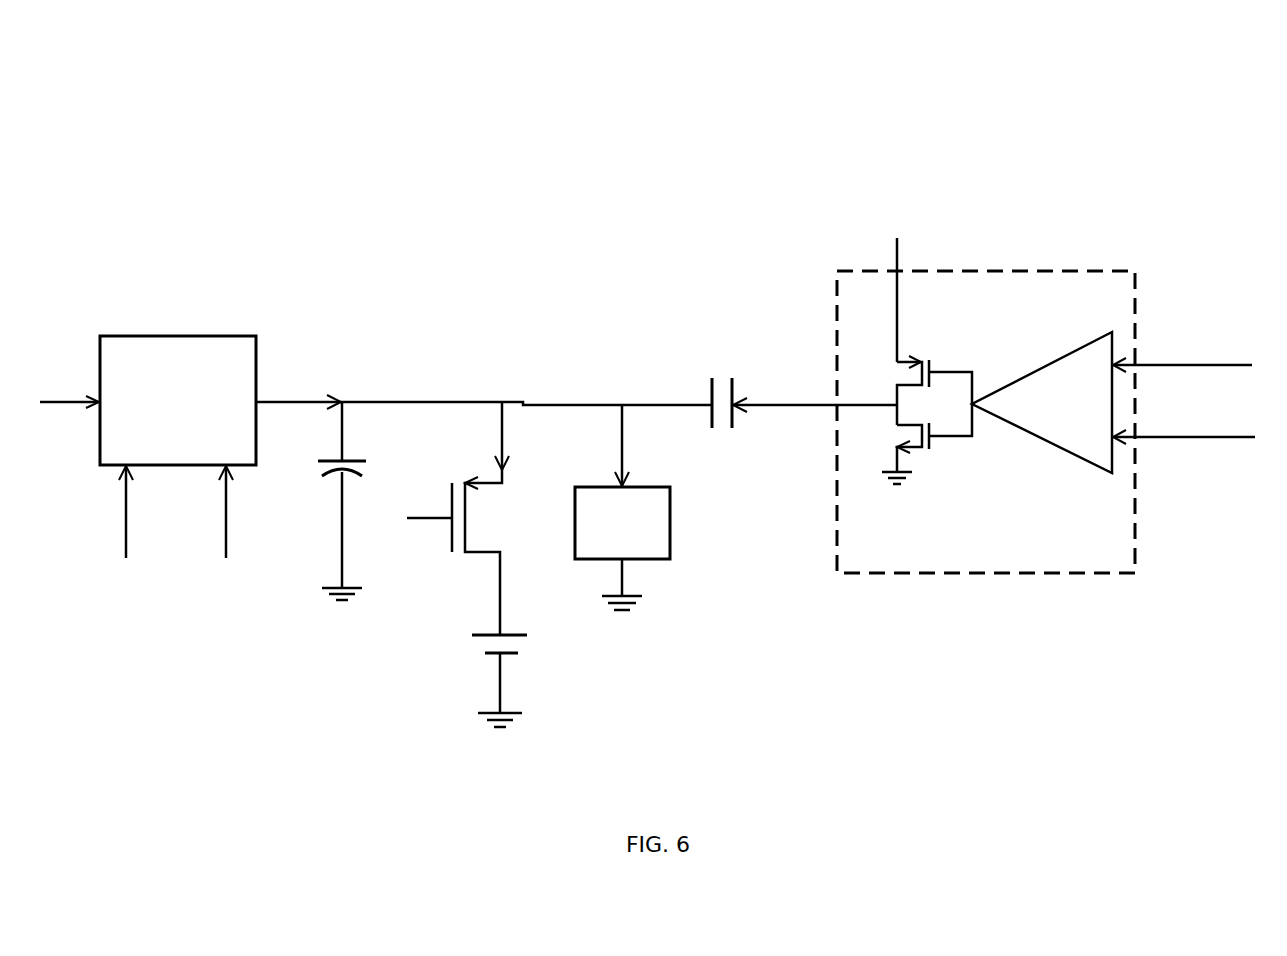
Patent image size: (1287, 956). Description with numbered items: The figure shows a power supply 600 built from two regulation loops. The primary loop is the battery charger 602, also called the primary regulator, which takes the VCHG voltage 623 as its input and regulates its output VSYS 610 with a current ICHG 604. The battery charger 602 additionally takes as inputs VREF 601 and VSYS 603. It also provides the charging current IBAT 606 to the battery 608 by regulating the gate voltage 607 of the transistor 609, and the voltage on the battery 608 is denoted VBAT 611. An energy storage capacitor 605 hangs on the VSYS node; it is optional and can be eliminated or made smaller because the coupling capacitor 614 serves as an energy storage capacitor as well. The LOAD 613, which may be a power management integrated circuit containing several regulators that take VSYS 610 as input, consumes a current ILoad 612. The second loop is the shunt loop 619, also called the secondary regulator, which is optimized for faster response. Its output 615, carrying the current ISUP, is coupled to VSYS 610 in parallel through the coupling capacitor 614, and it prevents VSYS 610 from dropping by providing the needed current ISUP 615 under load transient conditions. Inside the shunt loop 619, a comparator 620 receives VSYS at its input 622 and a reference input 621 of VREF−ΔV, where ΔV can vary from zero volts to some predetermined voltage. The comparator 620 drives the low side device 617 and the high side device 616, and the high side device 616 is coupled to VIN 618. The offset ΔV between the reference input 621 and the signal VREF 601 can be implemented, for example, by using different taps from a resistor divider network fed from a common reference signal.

The power supply 600 is at (1230, 126).
The VREF signal 601 is at (122, 597).
The battery charger 602 is at (204, 336).
The VSYS input 603 is at (238, 602).
The current ICHG 604 is at (297, 345).
The energy storage capacitor 605 is at (307, 472).
The charging current IBAT 606 is at (465, 436).
The gate voltage 607 is at (427, 527).
The battery 608 is at (472, 650).
The transistor 609 is at (461, 552).
The VSYS output 610 is at (523, 403).
The VBAT voltage 611 is at (552, 604).
The current ILoad 612 is at (672, 435).
The LOAD 613 is at (676, 522).
The coupling capacitor 614 is at (718, 367).
The shunt loop output 615 is at (770, 357).
The high side device 616 is at (893, 378).
The low side device 617 is at (887, 438).
The VIN 618 is at (893, 208).
The shunt loop 619 is at (1004, 258).
The comparator 620 is at (1043, 450).
The reference input VREF−ΔV 621 is at (1193, 320).
The VSYS input 622 is at (1182, 472).
The VCHG voltage 623 is at (53, 353).